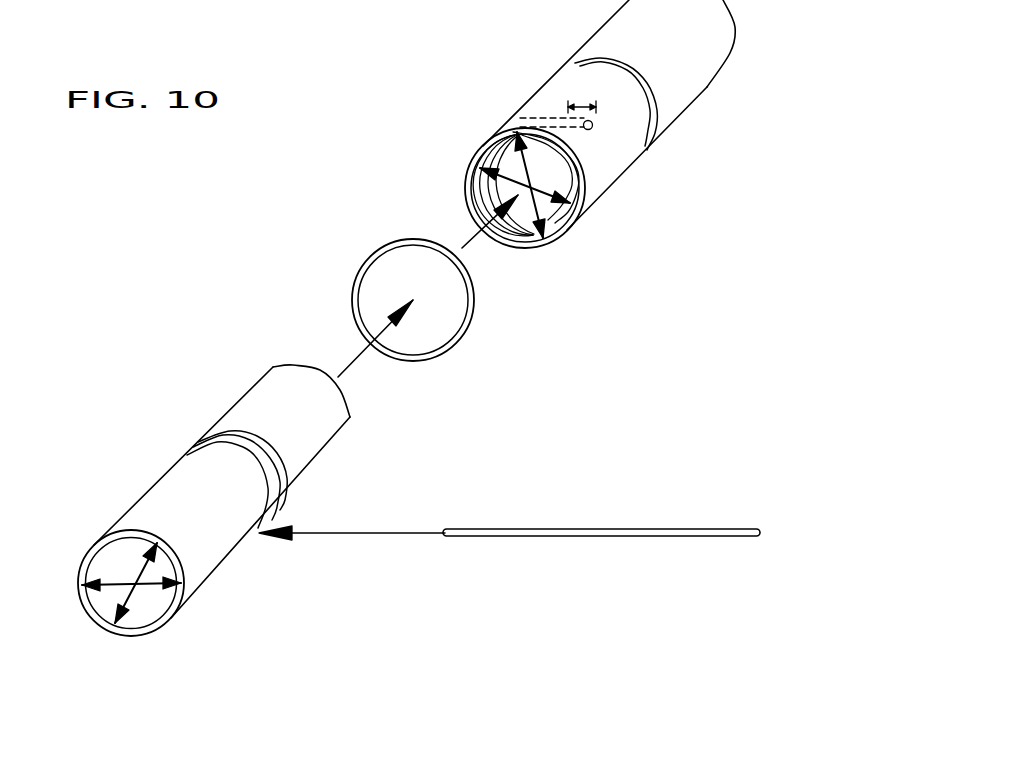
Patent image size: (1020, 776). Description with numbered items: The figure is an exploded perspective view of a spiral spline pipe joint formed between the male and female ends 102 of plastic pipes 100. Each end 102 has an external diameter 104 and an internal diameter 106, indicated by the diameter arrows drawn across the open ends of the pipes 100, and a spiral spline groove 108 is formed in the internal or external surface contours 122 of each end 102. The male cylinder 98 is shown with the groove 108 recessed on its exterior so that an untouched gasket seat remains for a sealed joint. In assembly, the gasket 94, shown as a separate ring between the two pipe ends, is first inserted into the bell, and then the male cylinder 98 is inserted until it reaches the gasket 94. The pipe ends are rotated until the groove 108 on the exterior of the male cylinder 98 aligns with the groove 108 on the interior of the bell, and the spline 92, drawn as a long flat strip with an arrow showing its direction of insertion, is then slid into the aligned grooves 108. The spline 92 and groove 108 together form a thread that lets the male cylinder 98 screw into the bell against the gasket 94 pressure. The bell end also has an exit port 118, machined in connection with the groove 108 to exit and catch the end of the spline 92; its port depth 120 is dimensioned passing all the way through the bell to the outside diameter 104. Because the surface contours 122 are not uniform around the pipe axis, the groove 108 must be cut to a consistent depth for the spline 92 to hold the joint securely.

The spline 92 is at (518, 530).
The gasket 94 is at (437, 357).
The male cylinder 98 is at (315, 468).
The plastic pipe 100 is at (707, 87).
The end 102 is at (250, 357).
The external diameter 104 is at (489, 145).
The internal diameter 106 is at (478, 190).
The spiral spline groove 108 is at (507, 226).
The exit port 118 is at (592, 130).
The port depth 120 is at (580, 100).
The surface contour 122 is at (538, 152).